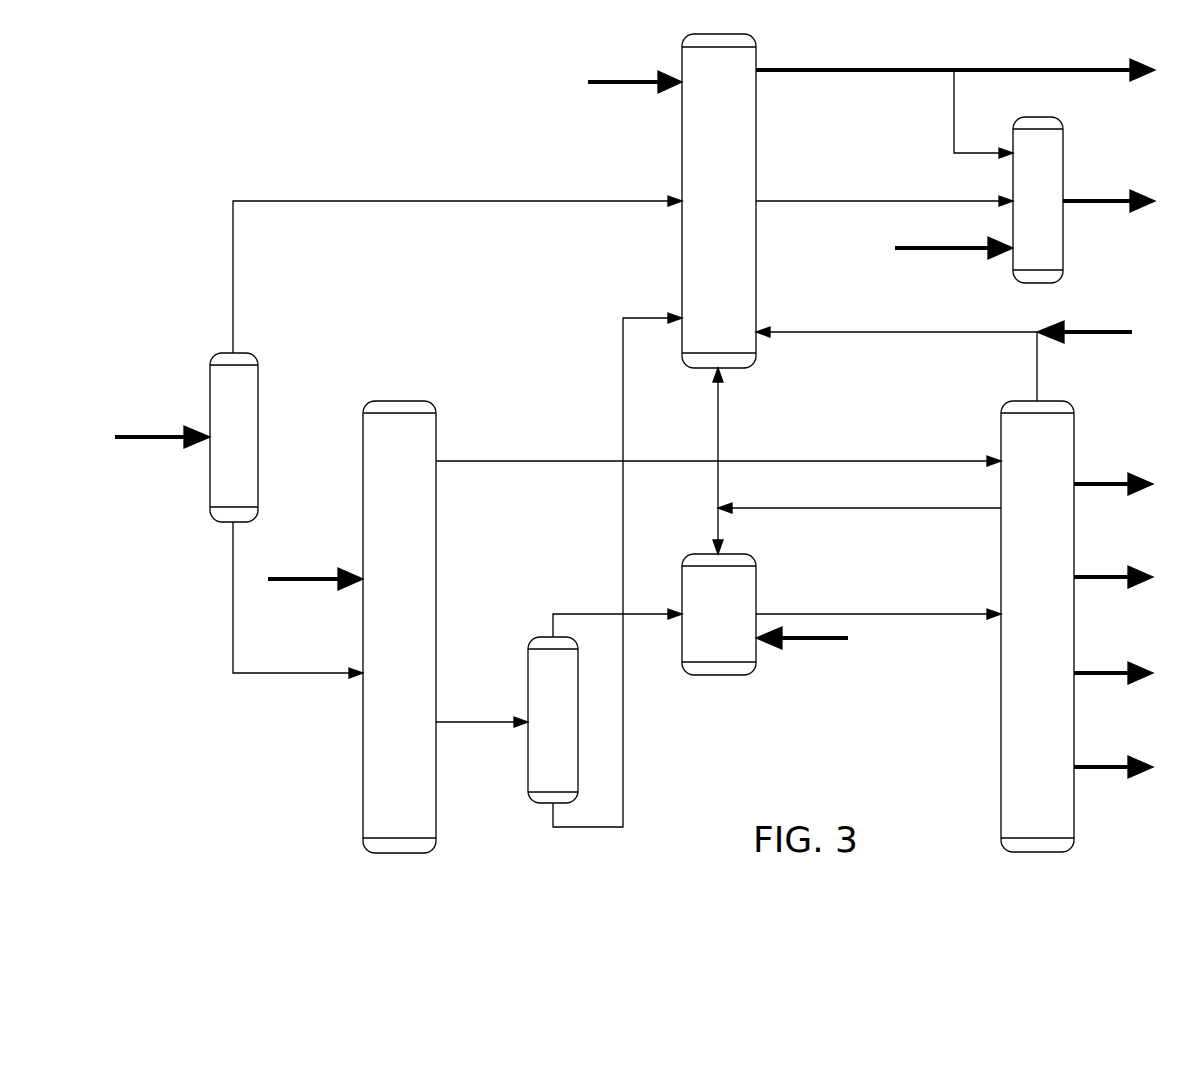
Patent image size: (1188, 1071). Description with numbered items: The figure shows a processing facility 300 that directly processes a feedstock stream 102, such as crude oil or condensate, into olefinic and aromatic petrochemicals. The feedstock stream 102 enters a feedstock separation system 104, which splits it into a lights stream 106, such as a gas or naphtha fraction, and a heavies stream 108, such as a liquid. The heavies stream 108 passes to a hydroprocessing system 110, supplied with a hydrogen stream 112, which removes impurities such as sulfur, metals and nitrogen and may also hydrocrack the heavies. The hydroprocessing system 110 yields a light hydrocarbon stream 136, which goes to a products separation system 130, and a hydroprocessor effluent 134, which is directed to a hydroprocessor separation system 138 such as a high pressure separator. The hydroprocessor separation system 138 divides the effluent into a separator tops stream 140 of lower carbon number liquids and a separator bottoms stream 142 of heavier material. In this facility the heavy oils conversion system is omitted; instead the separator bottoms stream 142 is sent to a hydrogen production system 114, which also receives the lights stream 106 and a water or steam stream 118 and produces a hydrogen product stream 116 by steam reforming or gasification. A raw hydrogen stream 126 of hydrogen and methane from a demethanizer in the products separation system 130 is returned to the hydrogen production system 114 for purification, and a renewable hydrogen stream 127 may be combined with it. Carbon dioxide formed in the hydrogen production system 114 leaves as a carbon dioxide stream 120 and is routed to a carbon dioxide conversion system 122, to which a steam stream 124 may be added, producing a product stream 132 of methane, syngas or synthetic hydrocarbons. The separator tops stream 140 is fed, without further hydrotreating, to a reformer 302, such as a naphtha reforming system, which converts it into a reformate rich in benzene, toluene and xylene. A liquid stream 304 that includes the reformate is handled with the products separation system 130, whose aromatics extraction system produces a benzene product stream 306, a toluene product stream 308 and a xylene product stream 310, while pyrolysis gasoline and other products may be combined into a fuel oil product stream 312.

The processing facility 300 is at (293, 72).
The feedstock stream 102 is at (165, 432).
The feedstock separation system 104 is at (258, 402).
The lights stream 106 is at (458, 200).
The heavies stream 108 is at (298, 675).
The hydroprocessing system 110 is at (363, 778).
The hydrogen stream 112 is at (315, 582).
The hydrogen production system 114 is at (756, 140).
The hydrogen product stream 116 is at (855, 68).
The water or steam stream 118 is at (636, 80).
The CO2 stream 120 is at (877, 198).
The CO2 conversion system 122 is at (1063, 165).
The steam stream 124 is at (955, 252).
The raw hydrogen stream 126 is at (1037, 368).
The renewable hydrogen stream 127 is at (1098, 336).
The products separation system 130 is at (1074, 436).
The product stream 132 is at (1105, 205).
The hydroprocessor effluent 134 is at (484, 718).
The light hydrocarbon stream 136 is at (528, 458).
The hydroprocessor separation system 138 is at (528, 756).
The separator tops stream 140 is at (586, 610).
The separator bottoms stream 142 is at (586, 828).
The reformer 302 is at (730, 676).
The liquid stream 304 is at (875, 618).
The benzene product stream 306 is at (1108, 488).
The toluene product stream 308 is at (1108, 581).
The xylene product stream 310 is at (1108, 677).
The fuel oil product stream 312 is at (1108, 771).